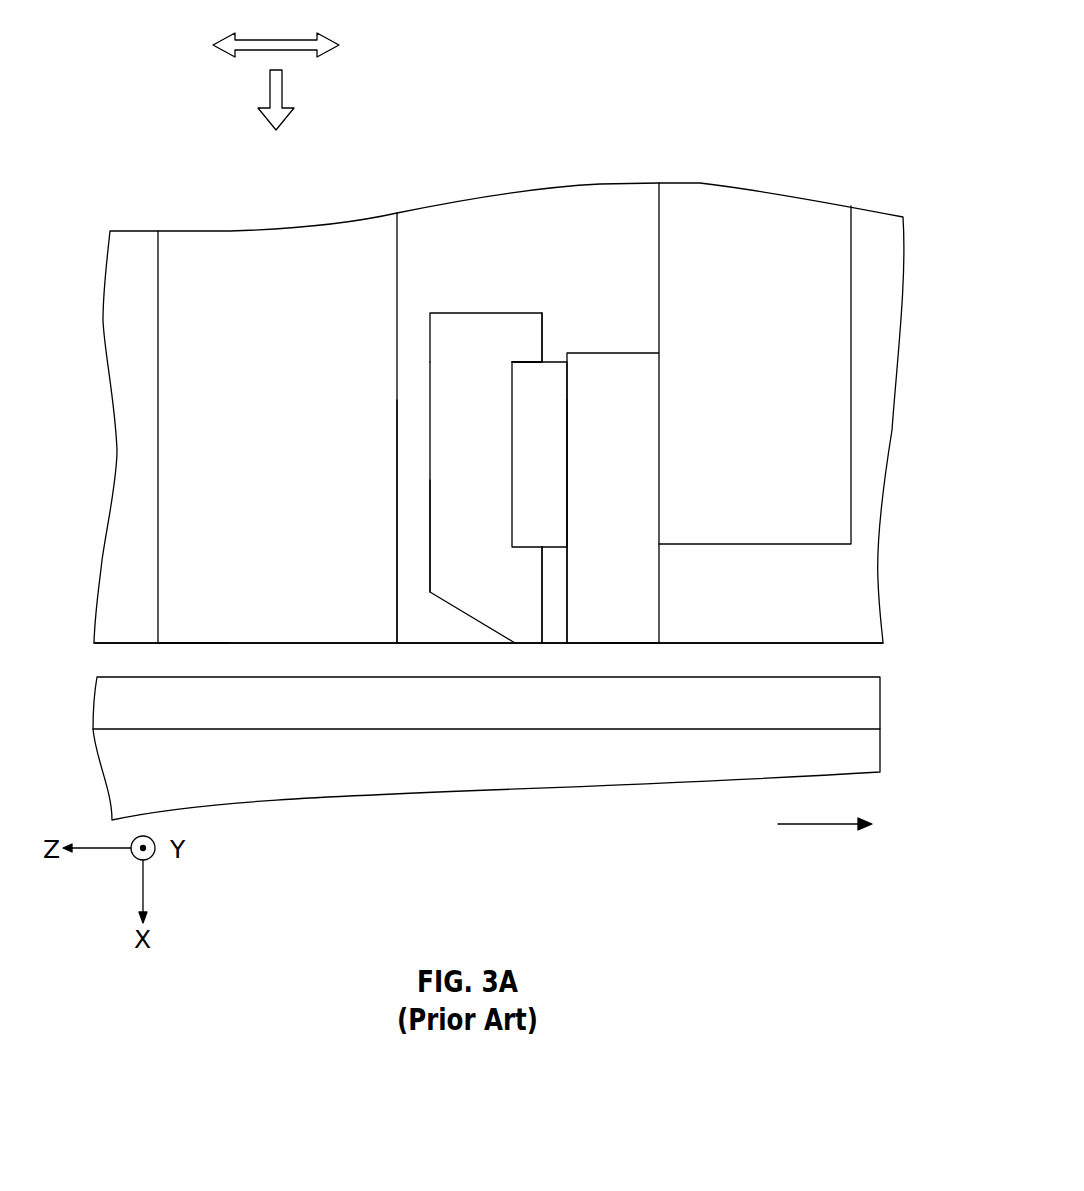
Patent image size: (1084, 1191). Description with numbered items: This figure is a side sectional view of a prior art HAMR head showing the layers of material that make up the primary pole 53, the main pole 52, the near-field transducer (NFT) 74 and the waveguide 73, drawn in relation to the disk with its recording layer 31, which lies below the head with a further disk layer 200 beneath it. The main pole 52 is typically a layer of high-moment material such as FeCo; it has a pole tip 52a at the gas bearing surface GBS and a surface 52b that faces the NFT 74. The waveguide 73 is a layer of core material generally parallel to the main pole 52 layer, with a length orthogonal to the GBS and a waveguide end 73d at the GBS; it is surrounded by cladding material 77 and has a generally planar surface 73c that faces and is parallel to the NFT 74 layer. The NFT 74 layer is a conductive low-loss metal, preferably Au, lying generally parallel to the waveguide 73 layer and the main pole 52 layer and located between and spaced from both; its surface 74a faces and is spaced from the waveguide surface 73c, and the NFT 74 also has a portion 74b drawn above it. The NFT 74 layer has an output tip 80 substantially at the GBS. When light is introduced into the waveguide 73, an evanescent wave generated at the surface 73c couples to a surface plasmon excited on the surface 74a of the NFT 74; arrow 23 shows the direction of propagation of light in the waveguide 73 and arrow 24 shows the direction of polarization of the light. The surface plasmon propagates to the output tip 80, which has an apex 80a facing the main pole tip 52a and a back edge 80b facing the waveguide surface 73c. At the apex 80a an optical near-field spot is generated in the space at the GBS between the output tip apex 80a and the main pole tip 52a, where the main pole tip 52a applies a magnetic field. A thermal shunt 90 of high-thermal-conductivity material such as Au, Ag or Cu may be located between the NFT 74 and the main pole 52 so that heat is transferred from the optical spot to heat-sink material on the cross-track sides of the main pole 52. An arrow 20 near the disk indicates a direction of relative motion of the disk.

The arrow 24 is at (309, 38).
The arrow 23 is at (268, 107).
The waveguide 73 is at (198, 243).
The cladding material 77 is at (128, 335).
The NFT surface 74a is at (427, 367).
The side shield portion 74b is at (441, 312).
The near-field transducer (NFT) 74 is at (519, 352).
The waveguide surface 73c is at (398, 490).
The thermal shunt 90 is at (550, 452).
The output tip 80 is at (456, 609).
The back edge 80b is at (425, 565).
The apex 80a is at (542, 643).
The main pole 52 is at (645, 602).
The main pole surface 52b is at (568, 507).
The main pole tip 52a is at (645, 645).
The waveguide end 73d is at (193, 643).
The primary pole 53 is at (833, 270).
The gas bearing surface GBS is at (878, 648).
The recording layer 31 is at (866, 710).
The substrate 200 is at (866, 748).
The head motion direction 20 is at (810, 824).